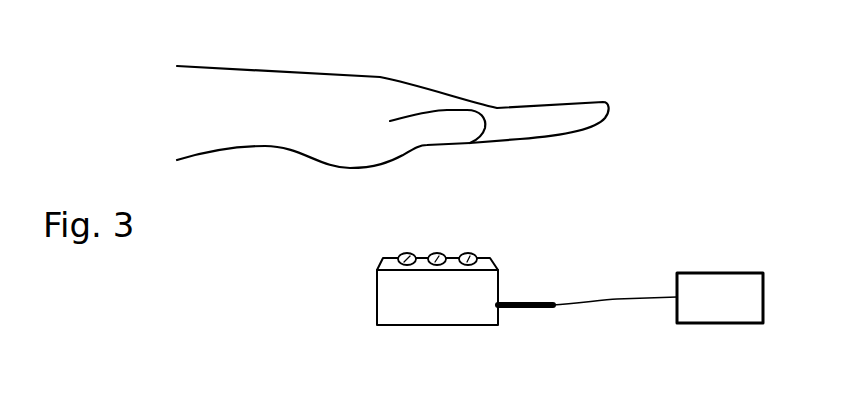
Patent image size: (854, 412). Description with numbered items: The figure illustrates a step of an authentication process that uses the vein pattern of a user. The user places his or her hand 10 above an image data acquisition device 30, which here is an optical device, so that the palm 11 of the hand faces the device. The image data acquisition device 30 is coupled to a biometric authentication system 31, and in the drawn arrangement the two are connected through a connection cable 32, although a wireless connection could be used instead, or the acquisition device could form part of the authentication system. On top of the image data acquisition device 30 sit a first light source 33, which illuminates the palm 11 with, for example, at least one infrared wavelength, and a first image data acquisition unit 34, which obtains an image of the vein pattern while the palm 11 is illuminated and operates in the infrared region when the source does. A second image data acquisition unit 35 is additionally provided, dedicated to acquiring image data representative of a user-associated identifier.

The hand 10 is at (363, 73).
The palm 11 is at (421, 157).
The image data acquisition device 30 is at (415, 327).
The biometric authentication system 31 is at (720, 272).
The connection cable 32 is at (626, 302).
The first light source 33 is at (403, 253).
The first image data acquisition unit 34 is at (438, 253).
The second image data acquisition unit 35 is at (468, 254).